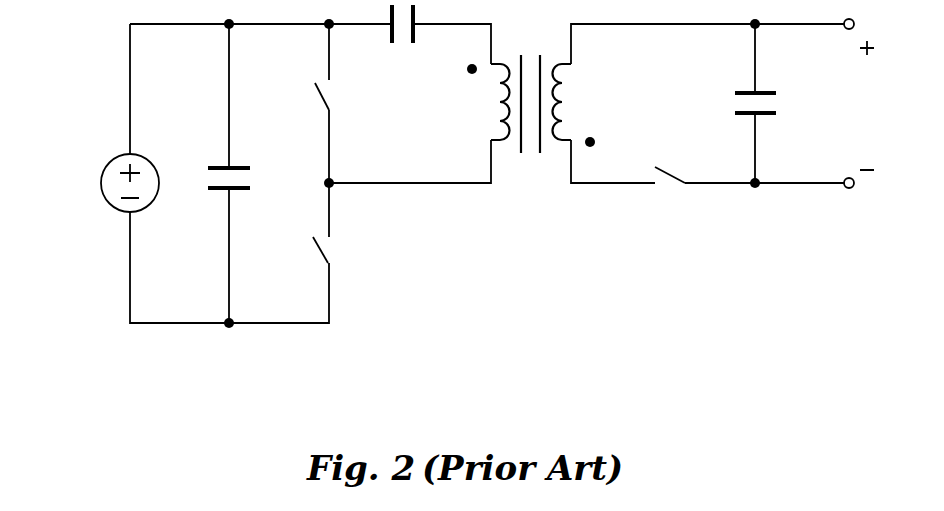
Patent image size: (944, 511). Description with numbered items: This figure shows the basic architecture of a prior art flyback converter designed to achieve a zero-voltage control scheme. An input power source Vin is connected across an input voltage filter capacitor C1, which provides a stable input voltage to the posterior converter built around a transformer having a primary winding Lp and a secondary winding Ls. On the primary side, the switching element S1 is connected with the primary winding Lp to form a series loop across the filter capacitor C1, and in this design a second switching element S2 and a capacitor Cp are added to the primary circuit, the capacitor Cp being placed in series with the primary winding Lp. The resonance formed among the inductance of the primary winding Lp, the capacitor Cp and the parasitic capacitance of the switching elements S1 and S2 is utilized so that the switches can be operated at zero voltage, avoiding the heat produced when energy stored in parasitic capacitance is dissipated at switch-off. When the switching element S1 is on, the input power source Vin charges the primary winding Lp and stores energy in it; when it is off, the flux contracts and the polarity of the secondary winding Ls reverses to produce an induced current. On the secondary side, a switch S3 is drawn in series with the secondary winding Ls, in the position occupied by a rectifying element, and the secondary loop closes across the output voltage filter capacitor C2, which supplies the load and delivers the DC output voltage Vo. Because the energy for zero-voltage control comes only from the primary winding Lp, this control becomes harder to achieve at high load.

The input power source Vin is at (105, 183).
The input voltage filter capacitor C1 is at (255, 180).
The switching element S1 is at (298, 257).
The switching element S2 is at (298, 102).
The capacitor Cp is at (404, 49).
The primary winding Lp is at (468, 102).
The secondary winding Ls is at (597, 105).
The third switch S3 is at (672, 201).
The output voltage filter capacitor C2 is at (731, 109).
The DC output voltage Vo is at (858, 103).